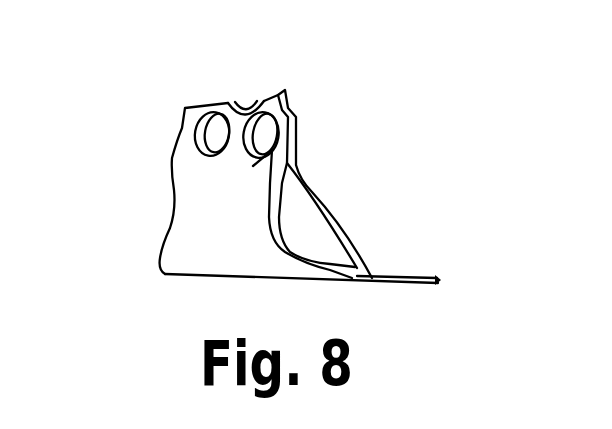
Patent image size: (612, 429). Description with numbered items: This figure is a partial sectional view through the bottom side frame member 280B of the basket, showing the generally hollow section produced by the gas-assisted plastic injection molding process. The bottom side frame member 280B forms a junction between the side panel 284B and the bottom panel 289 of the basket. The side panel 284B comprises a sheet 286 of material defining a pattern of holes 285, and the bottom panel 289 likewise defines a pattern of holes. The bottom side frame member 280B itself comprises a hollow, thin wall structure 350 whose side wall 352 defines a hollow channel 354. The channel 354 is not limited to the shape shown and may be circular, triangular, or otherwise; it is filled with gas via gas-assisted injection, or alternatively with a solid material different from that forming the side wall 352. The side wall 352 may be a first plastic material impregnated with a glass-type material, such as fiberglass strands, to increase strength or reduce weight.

The bottom side frame member 280B is at (357, 106).
The side panel 284B is at (228, 103).
The holes 285 is at (201, 152).
The sheet 286 is at (232, 148).
The hollow thin wall structure 350 is at (333, 165).
The side wall 352 is at (333, 206).
The hollow channel 354 is at (315, 232).
The bottom panel 289 is at (419, 299).